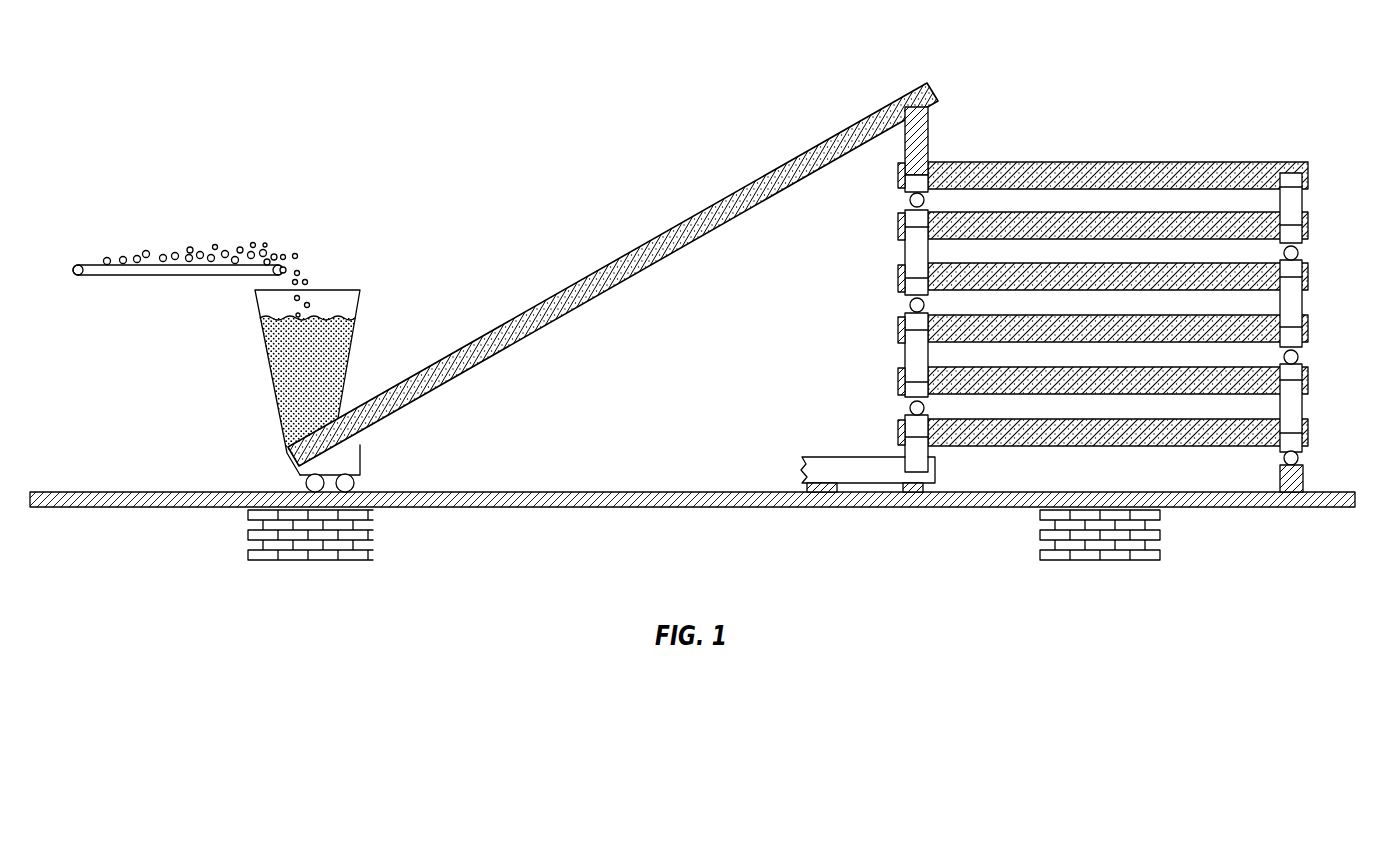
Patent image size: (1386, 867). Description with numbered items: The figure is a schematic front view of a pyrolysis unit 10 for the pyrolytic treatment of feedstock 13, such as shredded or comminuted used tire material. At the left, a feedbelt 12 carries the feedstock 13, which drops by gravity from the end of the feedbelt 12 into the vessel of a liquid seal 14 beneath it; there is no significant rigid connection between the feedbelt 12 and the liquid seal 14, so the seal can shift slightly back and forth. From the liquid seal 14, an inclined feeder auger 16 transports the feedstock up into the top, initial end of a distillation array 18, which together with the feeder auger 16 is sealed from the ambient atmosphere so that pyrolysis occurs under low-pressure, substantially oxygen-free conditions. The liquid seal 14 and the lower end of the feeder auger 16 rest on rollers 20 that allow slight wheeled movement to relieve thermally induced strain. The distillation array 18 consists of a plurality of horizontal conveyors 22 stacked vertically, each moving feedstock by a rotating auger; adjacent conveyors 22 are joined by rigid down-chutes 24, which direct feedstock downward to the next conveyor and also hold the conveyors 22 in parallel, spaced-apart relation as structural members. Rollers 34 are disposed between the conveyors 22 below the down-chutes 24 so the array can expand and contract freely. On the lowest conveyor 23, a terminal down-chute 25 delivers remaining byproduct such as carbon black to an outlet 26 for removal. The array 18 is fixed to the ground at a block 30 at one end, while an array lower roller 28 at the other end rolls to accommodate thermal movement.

The pyrolysis unit 10 is at (486, 74).
The feedbelt 12 is at (245, 271).
The feedstock 13 is at (147, 253).
The liquid seal 14 is at (267, 373).
The feeder auger 16 is at (650, 242).
The distillation array 18 is at (1102, 138).
The rollers 20 is at (352, 484).
The conveyors 22 is at (1043, 375).
The lowest conveyor 23 is at (1130, 443).
The down-chutes 24 is at (922, 142).
The terminal down-chute 25 is at (924, 451).
The outlet 26 is at (812, 455).
The array lower roller 28 is at (1299, 461).
The block 30 is at (825, 494).
The rollers 34 is at (909, 202).